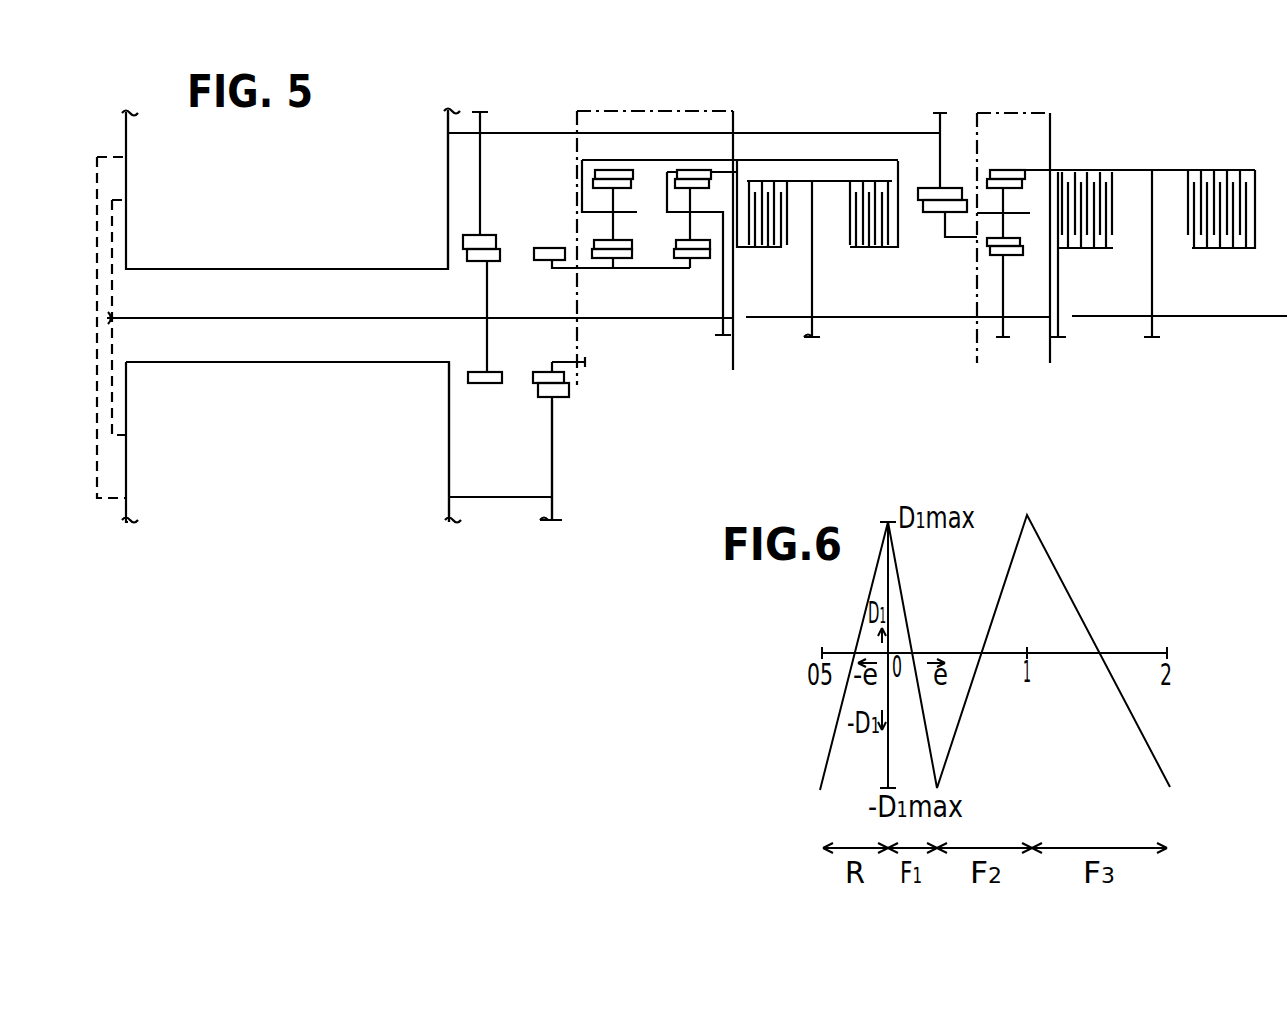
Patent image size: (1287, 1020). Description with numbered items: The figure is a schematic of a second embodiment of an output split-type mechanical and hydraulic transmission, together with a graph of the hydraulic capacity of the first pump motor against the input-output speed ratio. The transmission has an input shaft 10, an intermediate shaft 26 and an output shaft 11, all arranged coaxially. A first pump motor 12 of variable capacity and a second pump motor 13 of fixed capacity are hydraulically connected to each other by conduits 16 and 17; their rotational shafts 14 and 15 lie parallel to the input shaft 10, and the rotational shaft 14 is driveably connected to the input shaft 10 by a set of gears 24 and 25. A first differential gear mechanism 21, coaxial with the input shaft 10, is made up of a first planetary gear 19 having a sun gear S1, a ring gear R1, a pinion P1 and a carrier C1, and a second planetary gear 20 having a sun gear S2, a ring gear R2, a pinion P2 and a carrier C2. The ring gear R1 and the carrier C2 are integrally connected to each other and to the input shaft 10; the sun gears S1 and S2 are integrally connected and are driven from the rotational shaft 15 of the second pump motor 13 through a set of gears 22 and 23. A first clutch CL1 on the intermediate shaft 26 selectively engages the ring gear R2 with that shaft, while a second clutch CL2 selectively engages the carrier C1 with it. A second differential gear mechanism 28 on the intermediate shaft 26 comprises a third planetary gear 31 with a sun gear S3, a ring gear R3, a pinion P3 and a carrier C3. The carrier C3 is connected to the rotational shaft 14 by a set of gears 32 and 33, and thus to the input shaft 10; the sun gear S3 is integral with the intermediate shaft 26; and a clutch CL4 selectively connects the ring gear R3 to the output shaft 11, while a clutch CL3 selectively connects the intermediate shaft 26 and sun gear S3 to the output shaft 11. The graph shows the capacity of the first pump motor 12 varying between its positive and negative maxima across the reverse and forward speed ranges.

The input shaft 10 is at (250, 318).
The output shaft 11 is at (1240, 318).
The first pump motor 12 is at (420, 130).
The second pump motor 13 is at (437, 462).
The rotational shaft 14 is at (521, 132).
The rotational shaft 15 is at (493, 498).
The conduit 16 is at (106, 157).
The conduit 17 is at (112, 290).
The first planetary gear 19 is at (626, 333).
The second planetary gear 20 is at (683, 333).
The first differential gear mechanism 21 is at (595, 111).
The gear 22 is at (551, 268).
The gear 23 is at (553, 460).
The gear 24 is at (488, 305).
The gear 25 is at (481, 175).
The intermediate shaft 26 is at (908, 320).
The second differential gear mechanism 28 is at (1061, 127).
The third planetary gear 31 is at (1025, 334).
The gear 32 is at (945, 150).
The gear 33 is at (946, 230).
The ring gear R1 is at (667, 170).
The ring gear R2 is at (722, 169).
The ring gear R3 is at (1040, 170).
The carrier C1 is at (581, 183).
The carrier C2 is at (722, 200).
The carrier C3 is at (1020, 212).
The pinion P1 is at (612, 222).
The pinion P2 is at (689, 229).
The pinion P3 is at (1002, 230).
The sun gear S1 is at (615, 262).
The sun gear S2 is at (690, 262).
The sun gear S3 is at (1003, 264).
The first clutch CL1 is at (765, 247).
The second clutch CL2 is at (869, 247).
The clutch CL3 is at (1090, 248).
The clutch CL4 is at (1217, 248).